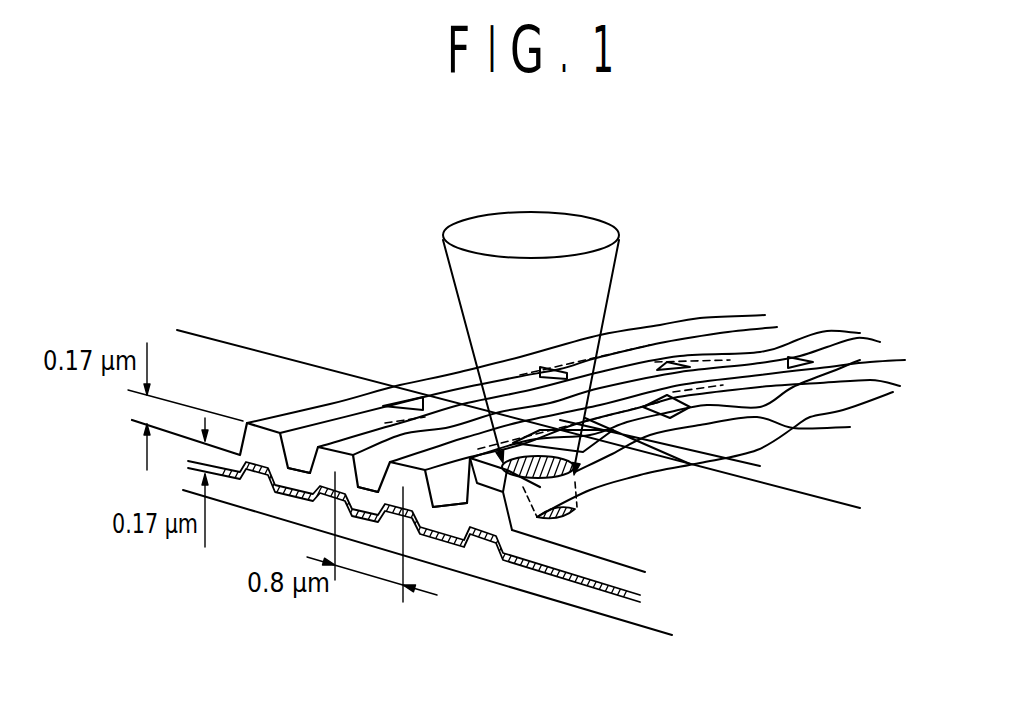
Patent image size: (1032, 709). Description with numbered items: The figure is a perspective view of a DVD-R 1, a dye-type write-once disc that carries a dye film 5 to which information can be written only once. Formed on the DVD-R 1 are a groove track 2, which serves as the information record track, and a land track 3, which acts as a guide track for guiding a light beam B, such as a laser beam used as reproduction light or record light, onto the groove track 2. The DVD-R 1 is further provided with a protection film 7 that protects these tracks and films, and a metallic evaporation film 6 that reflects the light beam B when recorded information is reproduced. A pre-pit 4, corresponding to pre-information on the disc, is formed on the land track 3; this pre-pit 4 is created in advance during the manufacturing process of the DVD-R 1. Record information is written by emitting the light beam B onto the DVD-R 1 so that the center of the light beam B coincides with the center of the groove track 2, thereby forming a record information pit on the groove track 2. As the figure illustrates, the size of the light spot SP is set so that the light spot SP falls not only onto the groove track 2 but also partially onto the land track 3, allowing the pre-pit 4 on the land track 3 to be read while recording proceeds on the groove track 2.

The DVD-R 1 is at (729, 588).
The groove track 2 is at (337, 447).
The land track 3 is at (300, 465).
The pre-pit 4 is at (390, 400).
The dye film 5 is at (625, 563).
The metallic evaporation film 6 is at (575, 575).
The protection film 7 is at (195, 340).
The light beam B is at (617, 262).
The light spot SP is at (602, 494).